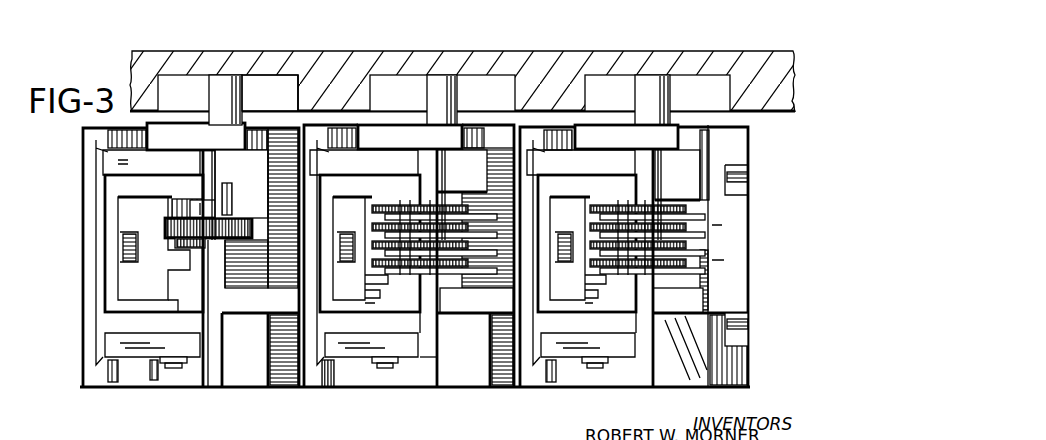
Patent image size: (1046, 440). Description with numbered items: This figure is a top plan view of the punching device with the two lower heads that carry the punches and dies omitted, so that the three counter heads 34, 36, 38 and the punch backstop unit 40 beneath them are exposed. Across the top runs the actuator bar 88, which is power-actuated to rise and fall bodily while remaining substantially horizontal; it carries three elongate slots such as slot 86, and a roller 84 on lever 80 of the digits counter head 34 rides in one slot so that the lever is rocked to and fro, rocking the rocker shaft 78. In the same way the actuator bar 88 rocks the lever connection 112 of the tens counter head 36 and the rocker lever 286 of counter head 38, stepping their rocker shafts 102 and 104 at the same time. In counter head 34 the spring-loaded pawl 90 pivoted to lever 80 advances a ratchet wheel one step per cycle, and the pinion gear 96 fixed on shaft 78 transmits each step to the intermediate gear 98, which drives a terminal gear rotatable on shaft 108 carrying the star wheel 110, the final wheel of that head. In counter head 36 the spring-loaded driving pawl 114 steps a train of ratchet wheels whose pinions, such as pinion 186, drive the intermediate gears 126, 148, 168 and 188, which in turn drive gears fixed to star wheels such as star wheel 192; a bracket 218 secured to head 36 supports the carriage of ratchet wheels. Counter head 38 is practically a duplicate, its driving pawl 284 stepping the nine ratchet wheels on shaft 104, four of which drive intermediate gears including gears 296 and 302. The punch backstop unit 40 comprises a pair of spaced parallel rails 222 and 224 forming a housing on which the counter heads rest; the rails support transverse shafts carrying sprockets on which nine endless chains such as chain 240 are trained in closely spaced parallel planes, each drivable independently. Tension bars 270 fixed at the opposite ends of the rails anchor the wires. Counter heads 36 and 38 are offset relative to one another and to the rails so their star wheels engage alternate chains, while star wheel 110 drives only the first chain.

The shaft 108 is at (119, 6).
The actuator bar 88 is at (320, 51).
The roller 84 is at (218, 86).
The elongate slot 86 is at (291, 75).
The lever 80 is at (190, 134).
The rail 224 is at (278, 133).
The lever connection 112 is at (432, 133).
The rocker lever 286 is at (614, 133).
The star wheel 110 is at (206, 188).
The intermediate gear 98 is at (238, 220).
The pinion gear 96 is at (168, 228).
The spring-loaded pawl 90 is at (132, 298).
The endless chain 240 is at (276, 268).
The spring-loaded driving pawl 114 is at (356, 289).
The intermediate gear 168 is at (368, 238).
The intermediate gear 148 is at (372, 233).
The intermediate gear 126 is at (452, 215).
The star wheel 192 is at (488, 262).
The intermediate gear 188 is at (457, 268).
The pinion 186 is at (370, 254).
The intermediate gear 302 is at (663, 212).
The intermediate gear 296 is at (664, 262).
The driving pawl 284 is at (569, 295).
The tension bar 270 is at (748, 296).
The counter head 34 is at (100, 388).
The rocker shaft 78 is at (170, 369).
The rail 222 is at (262, 373).
The counter head 36 is at (316, 380).
The bracket 218 is at (342, 352).
The rocker shaft 102 is at (382, 369).
The punch backstop unit 40 is at (462, 388).
The counter head 38 is at (542, 389).
The rocker shaft 104 is at (600, 369).